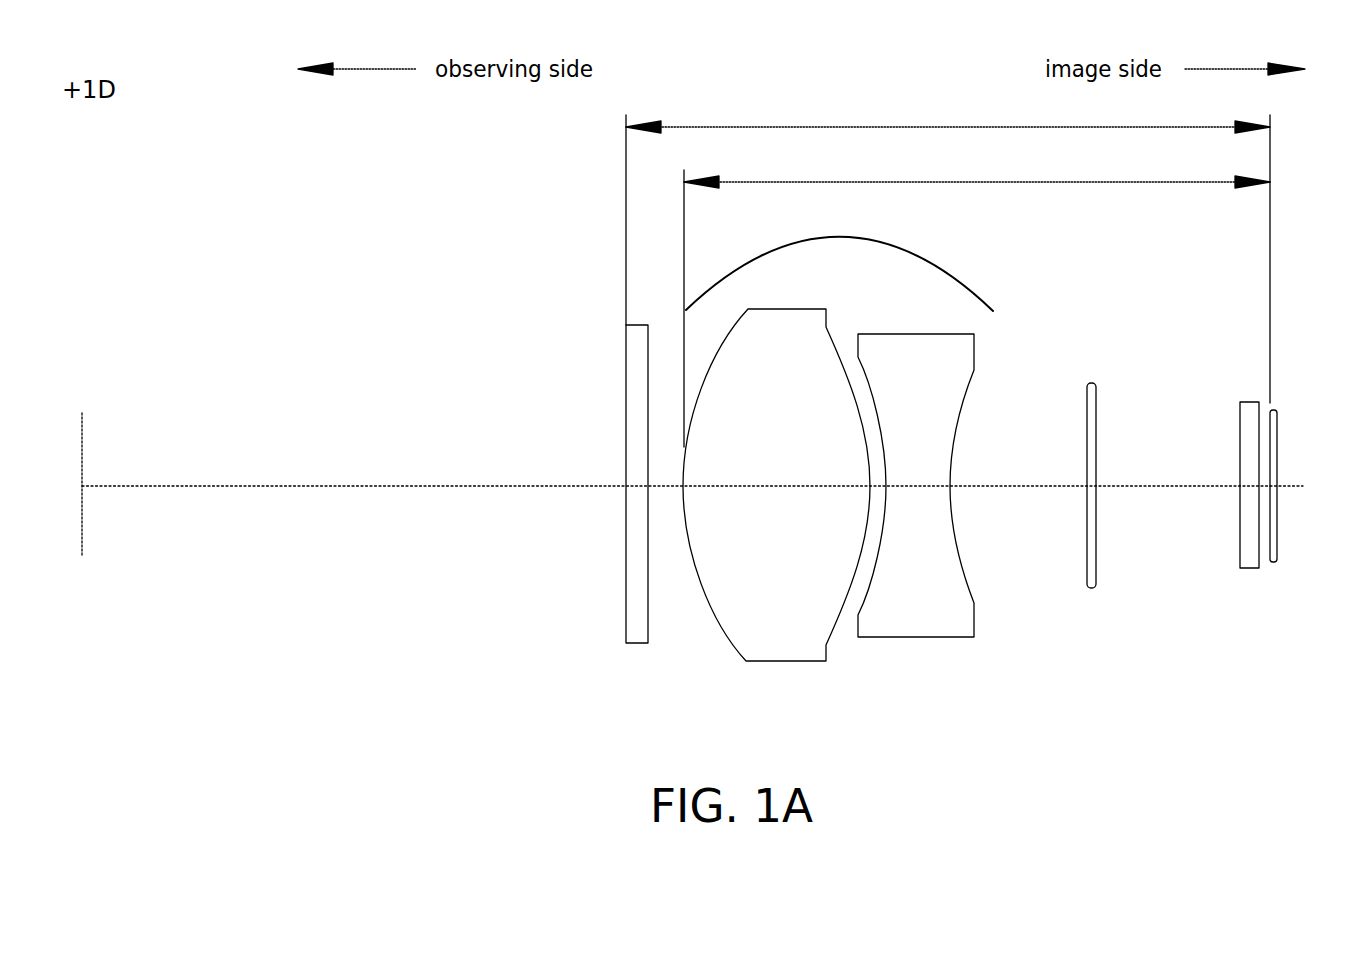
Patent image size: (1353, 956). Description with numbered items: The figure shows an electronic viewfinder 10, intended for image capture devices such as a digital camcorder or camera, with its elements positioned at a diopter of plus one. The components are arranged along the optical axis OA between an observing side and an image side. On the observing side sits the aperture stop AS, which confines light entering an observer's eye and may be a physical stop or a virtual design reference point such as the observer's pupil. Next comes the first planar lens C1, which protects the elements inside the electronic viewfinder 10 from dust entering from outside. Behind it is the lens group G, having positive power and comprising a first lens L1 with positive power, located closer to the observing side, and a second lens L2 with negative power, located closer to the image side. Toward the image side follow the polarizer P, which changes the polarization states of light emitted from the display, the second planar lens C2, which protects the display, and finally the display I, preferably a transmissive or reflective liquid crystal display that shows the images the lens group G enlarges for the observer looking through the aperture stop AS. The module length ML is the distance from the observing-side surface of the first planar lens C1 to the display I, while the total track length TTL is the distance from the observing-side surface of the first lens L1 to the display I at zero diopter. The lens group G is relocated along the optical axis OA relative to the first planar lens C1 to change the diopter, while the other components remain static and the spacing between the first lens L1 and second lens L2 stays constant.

The electronic viewfinder 10 is at (143, 155).
The aperture stop AS is at (82, 448).
The optical axis OA is at (712, 486).
The module length ML is at (948, 230).
The total track length TTL is at (977, 299).
The lens group G is at (839, 256).
The first planar lens C1 is at (636, 643).
The first lens L1 is at (784, 661).
The second lens L2 is at (912, 637).
The polarizer P is at (1092, 588).
The second planar lens C2 is at (1240, 557).
The display I is at (1274, 562).